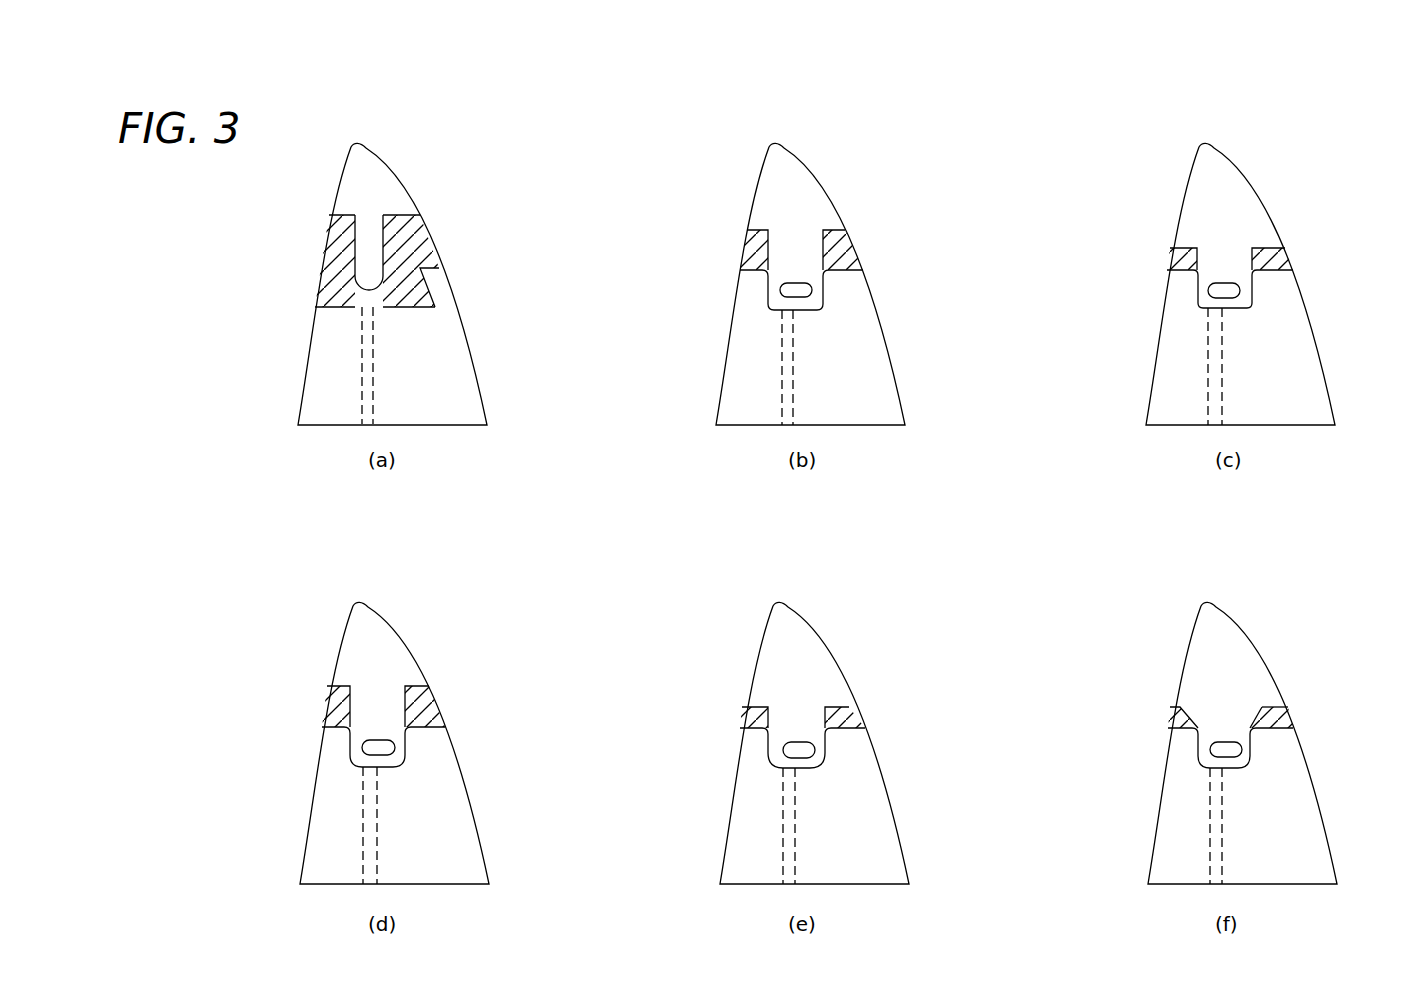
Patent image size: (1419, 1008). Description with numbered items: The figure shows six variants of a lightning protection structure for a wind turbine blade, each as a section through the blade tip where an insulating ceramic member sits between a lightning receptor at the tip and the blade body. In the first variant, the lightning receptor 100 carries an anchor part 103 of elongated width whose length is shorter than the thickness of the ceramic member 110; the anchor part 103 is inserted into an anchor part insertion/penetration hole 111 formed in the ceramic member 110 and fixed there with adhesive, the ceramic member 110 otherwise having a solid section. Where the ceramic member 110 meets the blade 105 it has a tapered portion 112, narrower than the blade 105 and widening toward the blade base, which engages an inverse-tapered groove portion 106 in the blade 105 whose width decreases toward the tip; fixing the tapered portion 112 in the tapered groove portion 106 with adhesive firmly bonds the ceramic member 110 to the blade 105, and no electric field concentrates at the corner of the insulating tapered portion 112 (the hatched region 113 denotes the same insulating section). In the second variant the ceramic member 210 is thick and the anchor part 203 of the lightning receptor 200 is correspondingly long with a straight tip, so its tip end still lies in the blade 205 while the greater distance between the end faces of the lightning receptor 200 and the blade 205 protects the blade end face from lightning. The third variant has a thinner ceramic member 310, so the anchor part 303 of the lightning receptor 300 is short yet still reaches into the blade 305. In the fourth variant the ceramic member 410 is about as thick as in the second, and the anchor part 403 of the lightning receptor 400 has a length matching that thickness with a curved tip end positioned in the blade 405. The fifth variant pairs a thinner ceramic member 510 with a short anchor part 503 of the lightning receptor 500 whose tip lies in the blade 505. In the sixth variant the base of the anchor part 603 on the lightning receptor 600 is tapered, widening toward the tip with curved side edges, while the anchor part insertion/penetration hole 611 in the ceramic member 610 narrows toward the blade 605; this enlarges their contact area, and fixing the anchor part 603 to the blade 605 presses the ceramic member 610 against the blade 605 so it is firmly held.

The lightning receptor 100 is at (380, 155).
The anchor part 103 is at (363, 253).
The blade 105 is at (483, 387).
The tapered groove portion 106 is at (423, 308).
The ceramic member 110 is at (430, 220).
The anchor part insertion/penetration hole 111 is at (368, 213).
The tapered portion 112 is at (435, 297).
The receptor portion 113 is at (410, 282).
The lightning receptor 200 is at (803, 153).
The anchor part 203 is at (783, 253).
The blade 205 is at (880, 310).
The ceramic member 210 is at (860, 240).
The lightning receptor 300 is at (1230, 153).
The anchor part 303 is at (1210, 253).
The blade 305 is at (1308, 308).
The ceramic member 310 is at (1287, 253).
The lightning receptor 400 is at (383, 612).
The anchor part 403 is at (363, 712).
The blade 405 is at (462, 768).
The ceramic member 410 is at (437, 703).
The lightning receptor 500 is at (803, 612).
The anchor part 503 is at (785, 713).
The blade 505 is at (880, 768).
The ceramic member 510 is at (863, 713).
The lightning receptor 600 is at (1233, 612).
The anchor part 603 is at (1212, 712).
The blade 605 is at (1308, 768).
The ceramic member 610 is at (1292, 713).
The anchor part insertion/penetration hole 611 is at (1253, 713).